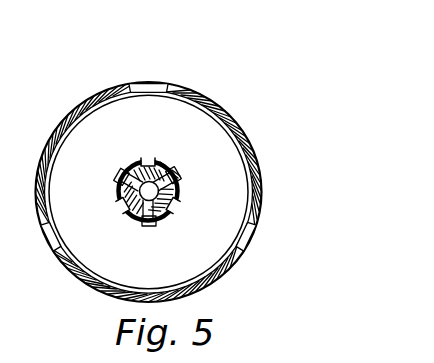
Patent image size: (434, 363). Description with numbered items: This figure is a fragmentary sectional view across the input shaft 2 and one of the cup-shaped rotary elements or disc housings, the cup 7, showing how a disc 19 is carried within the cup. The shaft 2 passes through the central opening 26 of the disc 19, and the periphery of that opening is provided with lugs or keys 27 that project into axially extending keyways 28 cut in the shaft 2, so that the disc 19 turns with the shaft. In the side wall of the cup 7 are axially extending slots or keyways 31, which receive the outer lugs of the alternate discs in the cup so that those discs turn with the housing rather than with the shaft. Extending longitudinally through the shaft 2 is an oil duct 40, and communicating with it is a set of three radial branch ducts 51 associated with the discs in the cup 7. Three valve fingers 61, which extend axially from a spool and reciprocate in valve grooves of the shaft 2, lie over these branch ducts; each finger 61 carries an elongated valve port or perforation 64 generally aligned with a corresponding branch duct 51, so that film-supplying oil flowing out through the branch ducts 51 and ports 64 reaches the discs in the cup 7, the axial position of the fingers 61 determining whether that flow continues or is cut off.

The shaft 2 is at (181, 192).
The disc housing 7 is at (237, 142).
The disc 19 is at (245, 160).
The opening 26 is at (180, 175).
The lugs or keys 27 is at (147, 158).
The keyways 28 is at (163, 165).
The slots or keyways 31 is at (164, 84).
The oil duct 40 is at (149, 191).
The radial branch ducts 51 is at (174, 212).
The valve fingers 61 is at (172, 167).
The valve port 64 is at (181, 177).